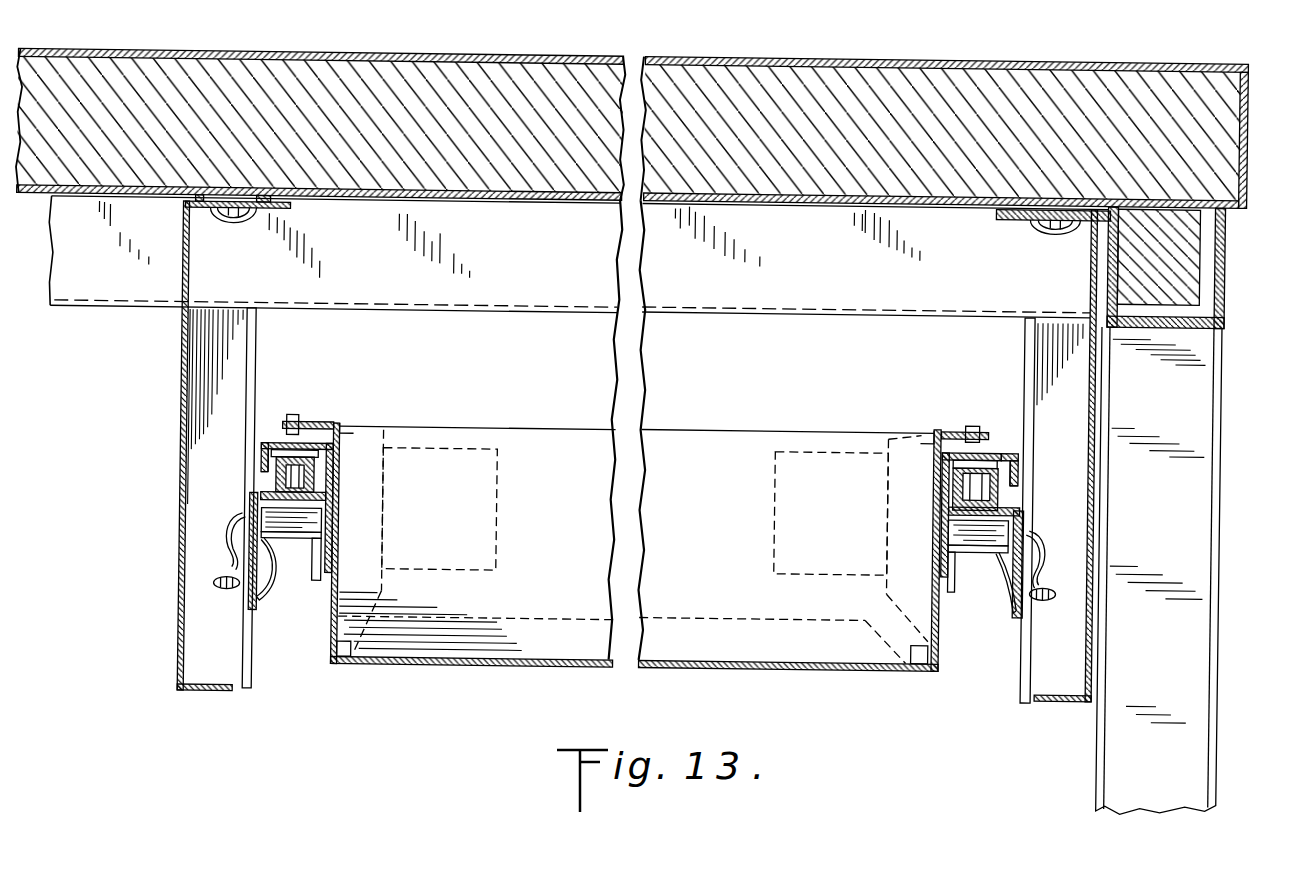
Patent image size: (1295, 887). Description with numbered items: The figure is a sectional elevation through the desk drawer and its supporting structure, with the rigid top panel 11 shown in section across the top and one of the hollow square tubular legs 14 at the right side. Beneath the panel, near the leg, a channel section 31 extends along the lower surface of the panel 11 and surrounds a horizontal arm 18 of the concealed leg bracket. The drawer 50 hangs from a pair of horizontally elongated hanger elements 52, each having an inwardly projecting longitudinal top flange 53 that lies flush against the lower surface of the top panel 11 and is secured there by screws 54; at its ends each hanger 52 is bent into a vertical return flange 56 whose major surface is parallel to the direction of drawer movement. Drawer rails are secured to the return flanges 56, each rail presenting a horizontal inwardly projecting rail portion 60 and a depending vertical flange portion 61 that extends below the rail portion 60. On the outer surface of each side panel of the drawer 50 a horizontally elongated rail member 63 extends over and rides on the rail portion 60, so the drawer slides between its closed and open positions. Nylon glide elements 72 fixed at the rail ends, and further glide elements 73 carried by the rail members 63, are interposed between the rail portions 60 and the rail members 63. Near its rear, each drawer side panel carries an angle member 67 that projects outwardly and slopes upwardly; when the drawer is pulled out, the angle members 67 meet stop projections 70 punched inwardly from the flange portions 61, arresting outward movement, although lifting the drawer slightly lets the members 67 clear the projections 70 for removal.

The top panel 11 is at (211, 67).
The legs 14 is at (1208, 478).
The horizontal arm 18 is at (1190, 249).
The channel section 31 is at (1200, 321).
The drawer 50 is at (463, 668).
The hanger elements 52 is at (181, 430).
The top flange 53 is at (285, 211).
The screws 54 is at (226, 228).
The return flange 56 is at (246, 635).
The rail portion 60 is at (278, 487).
The flange portion 61 is at (252, 567).
The rail member 63 is at (264, 447).
The angle member 67 is at (291, 543).
The stop projection 70 is at (272, 570).
The glide element 72 is at (338, 455).
The glide elements 73 is at (287, 426).